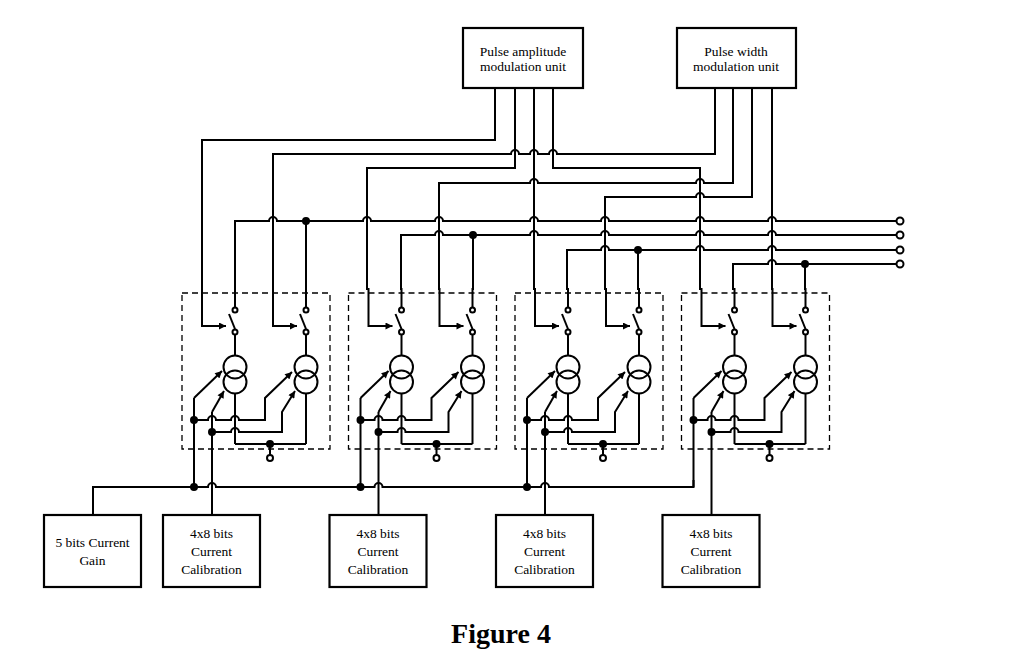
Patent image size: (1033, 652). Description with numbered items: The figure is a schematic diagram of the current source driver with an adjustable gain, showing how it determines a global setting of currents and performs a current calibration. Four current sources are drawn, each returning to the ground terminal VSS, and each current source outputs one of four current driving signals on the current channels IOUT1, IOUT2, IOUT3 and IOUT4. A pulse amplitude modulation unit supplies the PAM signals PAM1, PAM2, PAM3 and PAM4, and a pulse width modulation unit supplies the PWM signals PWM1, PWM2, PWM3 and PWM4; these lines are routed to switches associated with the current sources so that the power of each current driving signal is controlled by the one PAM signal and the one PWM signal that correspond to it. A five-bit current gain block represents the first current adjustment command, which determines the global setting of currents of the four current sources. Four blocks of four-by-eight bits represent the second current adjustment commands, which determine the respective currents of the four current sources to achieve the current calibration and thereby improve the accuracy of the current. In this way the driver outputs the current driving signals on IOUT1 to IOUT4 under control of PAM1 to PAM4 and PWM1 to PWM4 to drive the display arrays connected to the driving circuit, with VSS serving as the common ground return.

The PAM signal PAM4 is at (348, 189).
The PAM signal PAM3 is at (441, 189).
The PAM signal PAM2 is at (526, 189).
The PAM signal PAM1 is at (619, 189).
The PWM signal PWM4 is at (494, 189).
The PWM signal PWM3 is at (586, 189).
The PWM signal PWM2 is at (678, 189).
The PWM signal PWM1 is at (764, 189).
The current channel IOUT4 is at (593, 252).
The current channel IOUT3 is at (676, 259).
The current channel IOUT2 is at (759, 266).
The current channel IOUT1 is at (842, 273).
The ground terminal VSS is at (519, 460).